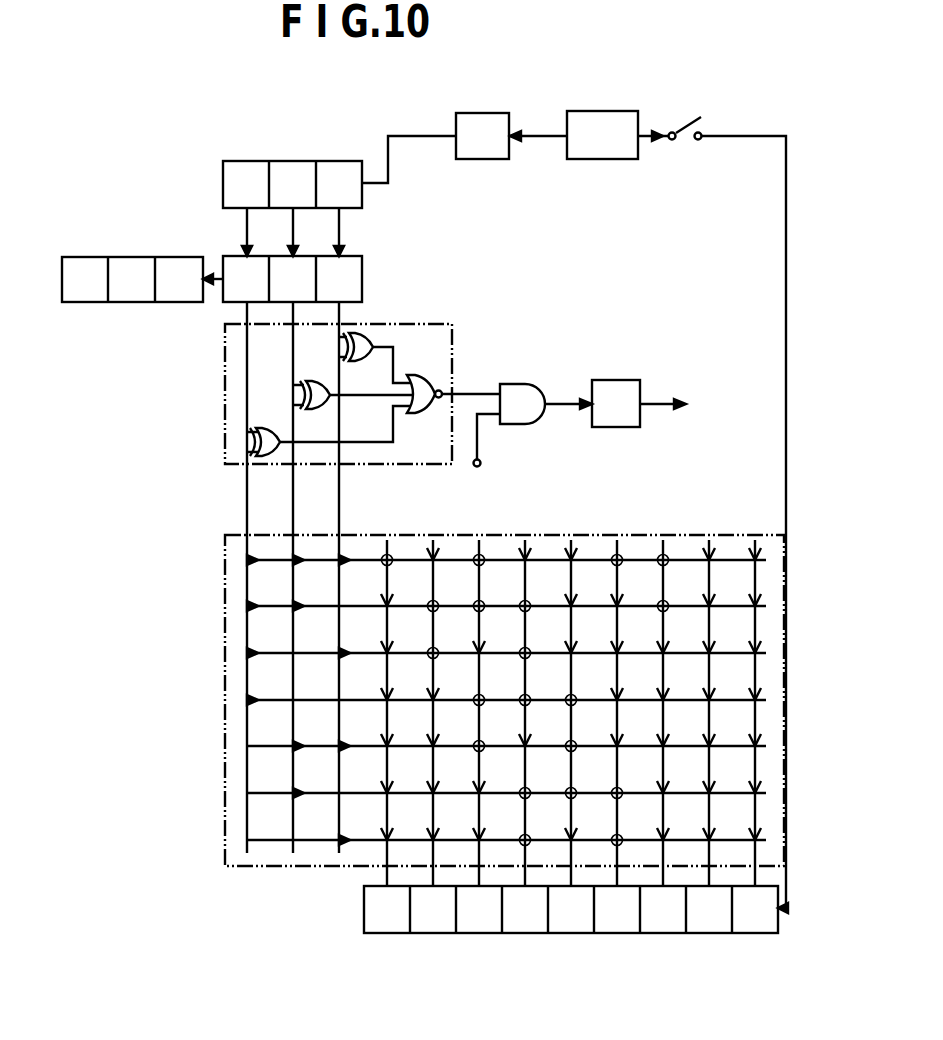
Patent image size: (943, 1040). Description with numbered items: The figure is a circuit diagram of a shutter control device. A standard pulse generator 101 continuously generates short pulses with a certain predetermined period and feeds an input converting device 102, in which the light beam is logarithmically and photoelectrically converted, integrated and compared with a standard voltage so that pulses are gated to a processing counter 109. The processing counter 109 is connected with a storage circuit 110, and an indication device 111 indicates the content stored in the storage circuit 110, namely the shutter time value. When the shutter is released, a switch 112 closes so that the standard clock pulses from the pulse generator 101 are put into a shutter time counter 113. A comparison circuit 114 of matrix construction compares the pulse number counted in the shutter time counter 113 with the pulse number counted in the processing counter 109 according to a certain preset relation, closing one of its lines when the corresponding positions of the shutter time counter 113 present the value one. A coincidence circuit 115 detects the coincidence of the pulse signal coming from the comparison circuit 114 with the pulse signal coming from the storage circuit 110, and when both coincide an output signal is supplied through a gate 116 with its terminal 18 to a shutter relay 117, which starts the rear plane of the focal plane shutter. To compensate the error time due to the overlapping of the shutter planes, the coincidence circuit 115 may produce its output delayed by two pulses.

The standard pulse generator 101 is at (600, 111).
The input converting device 102 is at (478, 113).
The processing counter 109 is at (290, 161).
The storage circuit 110 is at (362, 268).
The indication device 111 is at (165, 257).
The switch 112 is at (703, 122).
The shutter time counter 113 is at (366, 912).
The comparison circuit 114 is at (580, 535).
The coincidence circuit 115 is at (428, 325).
The AND gate 116 is at (522, 395).
The shutter relay 117 is at (618, 388).
The input terminal 18 is at (483, 459).